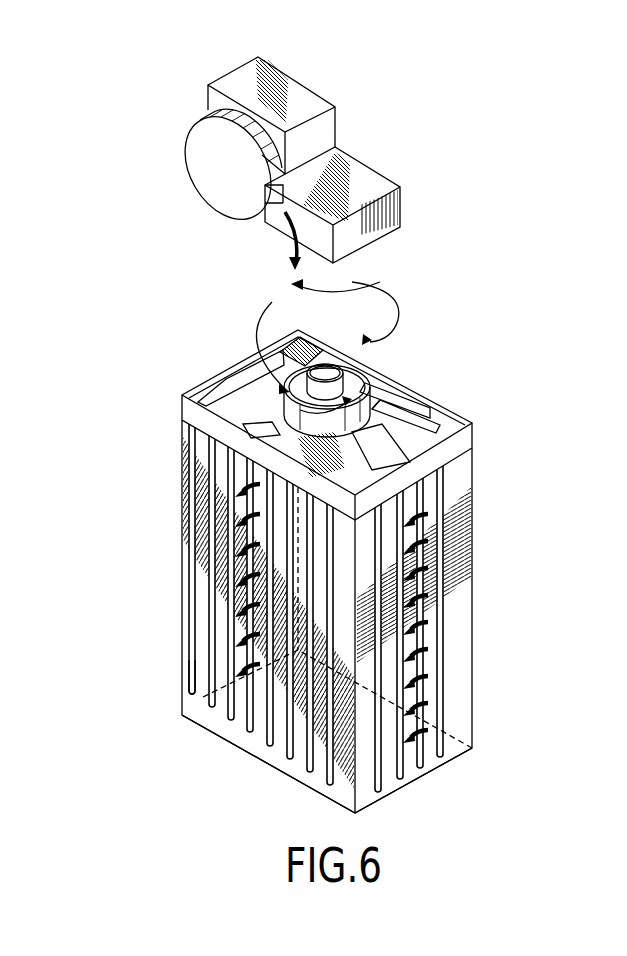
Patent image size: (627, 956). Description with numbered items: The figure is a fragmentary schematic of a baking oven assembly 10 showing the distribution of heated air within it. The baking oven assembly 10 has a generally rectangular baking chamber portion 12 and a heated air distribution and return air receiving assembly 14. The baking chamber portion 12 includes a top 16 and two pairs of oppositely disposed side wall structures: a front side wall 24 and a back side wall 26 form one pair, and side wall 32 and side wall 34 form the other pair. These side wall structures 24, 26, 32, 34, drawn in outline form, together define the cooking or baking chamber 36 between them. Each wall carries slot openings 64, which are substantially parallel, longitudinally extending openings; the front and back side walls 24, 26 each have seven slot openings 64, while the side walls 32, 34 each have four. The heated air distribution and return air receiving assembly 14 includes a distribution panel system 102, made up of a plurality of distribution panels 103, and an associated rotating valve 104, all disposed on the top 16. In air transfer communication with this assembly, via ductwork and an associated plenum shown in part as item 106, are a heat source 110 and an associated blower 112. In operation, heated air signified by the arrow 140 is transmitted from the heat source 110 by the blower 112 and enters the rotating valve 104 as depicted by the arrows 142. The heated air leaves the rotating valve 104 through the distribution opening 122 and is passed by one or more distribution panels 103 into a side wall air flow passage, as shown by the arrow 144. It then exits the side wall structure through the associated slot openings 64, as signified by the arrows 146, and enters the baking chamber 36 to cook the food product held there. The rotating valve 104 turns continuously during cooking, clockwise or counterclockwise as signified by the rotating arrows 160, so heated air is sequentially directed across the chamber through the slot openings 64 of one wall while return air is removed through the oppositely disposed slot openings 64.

The baking oven assembly 10 is at (116, 152).
The baking chamber portion 12 is at (530, 540).
The heated air distribution and return air receiving assembly 14 is at (484, 293).
The top 16 is at (461, 450).
The front side wall 24 is at (278, 763).
The back side wall 26 is at (455, 725).
The side wall 32 is at (205, 698).
The side wall 34 is at (398, 790).
The cooking chamber 36 is at (357, 814).
The slot opening 64 is at (183, 433).
The distribution panel system 102 is at (444, 390).
The distribution panels 103 is at (222, 397).
The rotating valve 104 is at (354, 275).
The ductwork and associated plenum 106 is at (402, 195).
The heat source 110 is at (296, 90).
The blower 112 is at (198, 163).
The distribution opening 122 is at (358, 420).
The arrow 140 is at (283, 238).
The arrows 142 is at (356, 366).
The arrow 144 is at (400, 463).
The arrows 146 is at (433, 606).
The rotating arrows 160 is at (388, 322).